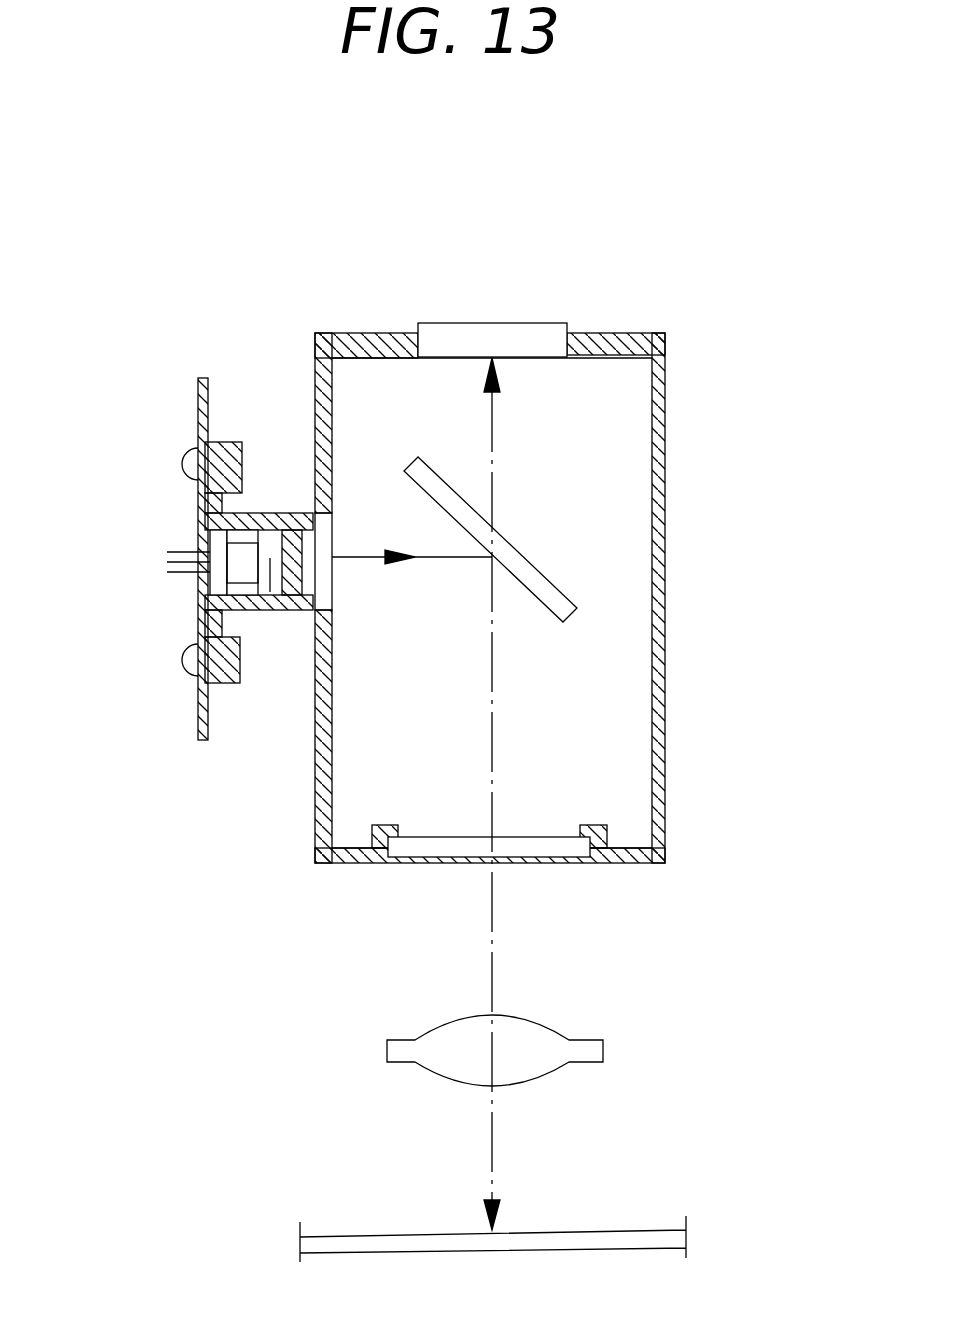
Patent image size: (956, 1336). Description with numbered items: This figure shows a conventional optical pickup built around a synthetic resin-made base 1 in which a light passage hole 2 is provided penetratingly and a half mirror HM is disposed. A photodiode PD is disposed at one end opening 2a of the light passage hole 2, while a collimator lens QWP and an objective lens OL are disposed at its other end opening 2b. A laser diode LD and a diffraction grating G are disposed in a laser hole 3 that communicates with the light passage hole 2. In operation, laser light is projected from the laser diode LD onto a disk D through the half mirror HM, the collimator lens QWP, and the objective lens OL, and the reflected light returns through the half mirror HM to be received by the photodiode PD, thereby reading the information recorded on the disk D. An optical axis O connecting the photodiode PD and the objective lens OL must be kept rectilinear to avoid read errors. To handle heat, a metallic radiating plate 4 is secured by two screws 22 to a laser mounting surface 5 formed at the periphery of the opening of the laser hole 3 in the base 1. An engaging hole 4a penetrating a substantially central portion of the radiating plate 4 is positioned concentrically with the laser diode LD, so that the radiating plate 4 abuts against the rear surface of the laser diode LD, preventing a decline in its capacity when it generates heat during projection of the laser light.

The base 1 is at (665, 758).
The light passage hole 2 is at (585, 500).
The one end opening 2a is at (573, 357).
The other end opening 2b is at (560, 822).
The laser hole 3 is at (275, 613).
The radiating plate 4 is at (203, 378).
The engaging hole 4a is at (200, 541).
The laser mounting surface 5 is at (200, 503).
The screw 22 is at (185, 462).
The diffraction grating G is at (288, 516).
The laser diode LD is at (200, 580).
The photodiode PD is at (487, 340).
The half mirror HM is at (545, 573).
The collimator lens QWP is at (422, 846).
The objective lens OL is at (457, 1055).
The optical axis O is at (495, 806).
The disk D is at (592, 1230).